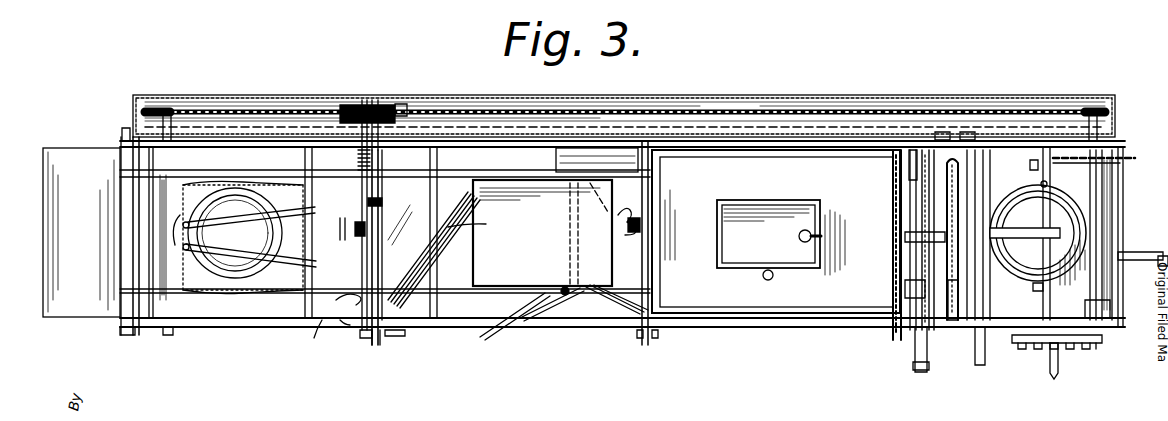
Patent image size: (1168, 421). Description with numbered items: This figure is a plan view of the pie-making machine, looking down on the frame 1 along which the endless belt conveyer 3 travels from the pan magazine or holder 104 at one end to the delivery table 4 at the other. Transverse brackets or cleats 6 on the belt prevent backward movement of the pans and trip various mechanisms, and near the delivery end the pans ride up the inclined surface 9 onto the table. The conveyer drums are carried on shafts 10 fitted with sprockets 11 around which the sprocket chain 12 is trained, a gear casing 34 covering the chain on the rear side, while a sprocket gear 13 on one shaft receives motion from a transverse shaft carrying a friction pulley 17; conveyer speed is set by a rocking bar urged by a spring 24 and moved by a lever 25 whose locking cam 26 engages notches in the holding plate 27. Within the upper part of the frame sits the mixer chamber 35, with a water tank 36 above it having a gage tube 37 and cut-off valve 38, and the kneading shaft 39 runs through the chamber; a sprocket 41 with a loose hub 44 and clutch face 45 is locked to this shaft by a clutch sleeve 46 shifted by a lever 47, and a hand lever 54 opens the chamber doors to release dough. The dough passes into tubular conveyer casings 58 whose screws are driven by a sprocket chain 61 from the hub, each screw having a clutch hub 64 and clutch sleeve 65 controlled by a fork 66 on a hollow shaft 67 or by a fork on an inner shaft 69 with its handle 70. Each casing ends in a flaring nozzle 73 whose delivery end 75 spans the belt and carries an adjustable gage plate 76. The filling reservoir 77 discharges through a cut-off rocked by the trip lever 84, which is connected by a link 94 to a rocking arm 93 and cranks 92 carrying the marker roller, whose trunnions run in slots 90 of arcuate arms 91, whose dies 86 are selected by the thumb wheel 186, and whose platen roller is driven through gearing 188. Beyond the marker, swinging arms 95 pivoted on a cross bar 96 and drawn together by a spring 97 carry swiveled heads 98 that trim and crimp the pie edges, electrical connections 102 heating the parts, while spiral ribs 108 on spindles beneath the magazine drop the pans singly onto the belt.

The frame 1 is at (250, 322).
The endless belt conveyer 3 is at (1010, 305).
The delivery table 4 is at (67, 187).
The transverse brackets or cleats 6 is at (1135, 218).
The inclined surface 9 is at (320, 333).
The axles or shafts 10 is at (185, 304).
The sprockets 11 is at (182, 113).
The sprocket chain 12 is at (270, 115).
The sprocket gear 13 is at (1143, 147).
The friction pulley 17 is at (1138, 248).
The spring 24 is at (1115, 304).
The lever 25 is at (1050, 352).
The locking cam or eccentric 26 is at (1050, 378).
The quadrant or holding plate 27 is at (1078, 347).
The gear casing 34 is at (406, 106).
The mixer chamber or hopper 35 is at (790, 312).
The tank 36 is at (768, 204).
The sight glass or gage tube 37 is at (762, 277).
The cut-off valve 38 is at (799, 237).
The mixing or kneading shaft 39 is at (1025, 240).
The sprocket 41 is at (980, 170).
The hub 44 is at (915, 253).
The clutch face 45 is at (912, 213).
The clutch sleeve 46 is at (988, 212).
The lever 47 is at (970, 370).
The hand lever 54 is at (647, 342).
The tubular conveyer casings 58 is at (597, 160).
The sprocket chain 61 is at (895, 265).
The clutch hub 64 is at (892, 162).
The clutch sleeve 65 is at (965, 140).
The fork 66 is at (935, 125).
The hollow shaft 67 is at (900, 295).
The shaft 69 is at (360, 192).
The lever or handle member 70 is at (921, 349).
The nozzle 73 is at (633, 325).
The delivery end of the nozzle 75 is at (392, 192).
The gage plate 76 is at (390, 243).
The reservoir 77 is at (542, 233).
The rocking arm or trip lever 84 is at (559, 290).
The dies or marker elements 86 is at (356, 222).
The slots 90 is at (378, 110).
The arcuate arms 91 is at (345, 325).
The cranks 92 is at (358, 345).
The crank or rocking arm 93 is at (395, 340).
The link 94 is at (482, 333).
The levers or horizontally swinging arms 95 is at (282, 185).
The cross bar or support 96 is at (333, 340).
The spring 97 is at (278, 233).
The swiveled heads 98 is at (175, 225).
The electrical connections 102 is at (640, 225).
The magazine or holder 104 is at (1063, 210).
The spirally disposed ribs 108 is at (1039, 186).
The index or thumb wheel 186 is at (378, 348).
The gearing 188 is at (347, 105).